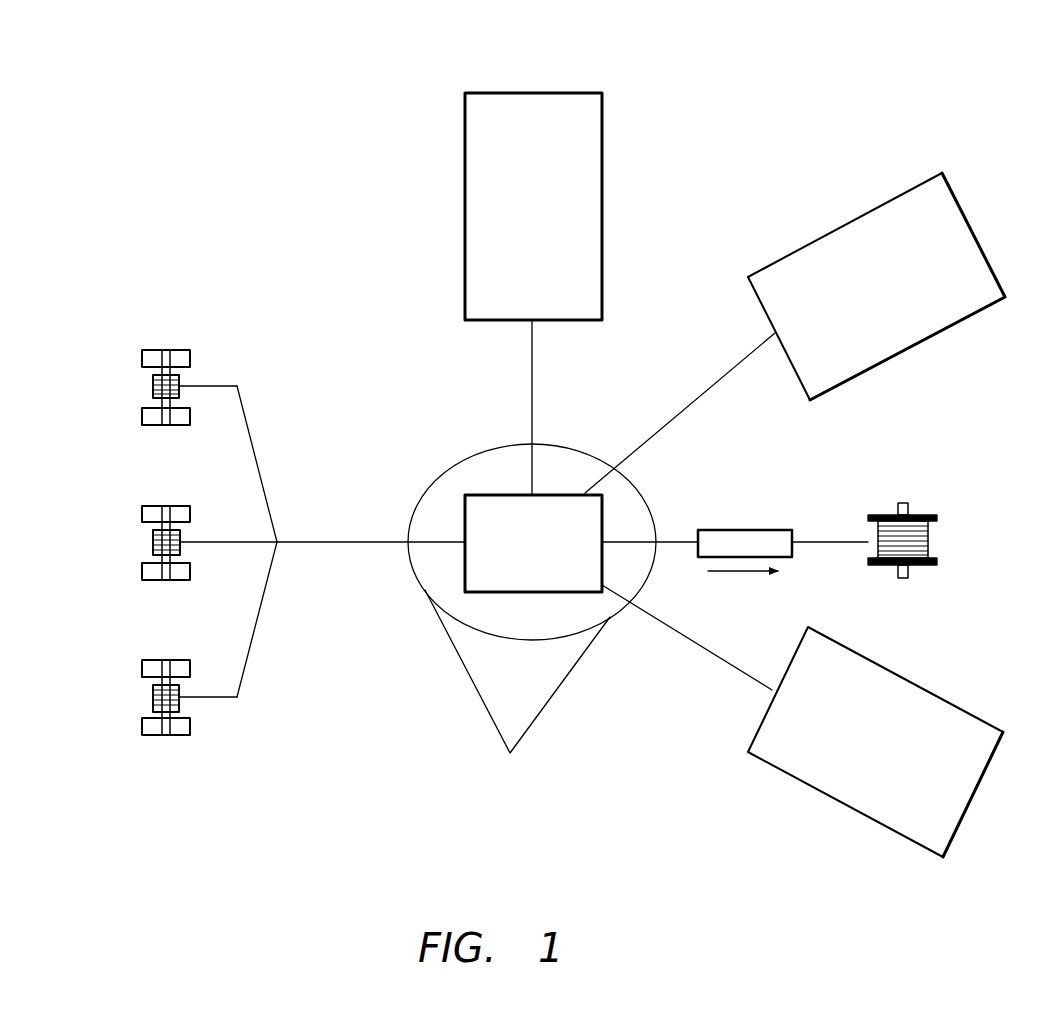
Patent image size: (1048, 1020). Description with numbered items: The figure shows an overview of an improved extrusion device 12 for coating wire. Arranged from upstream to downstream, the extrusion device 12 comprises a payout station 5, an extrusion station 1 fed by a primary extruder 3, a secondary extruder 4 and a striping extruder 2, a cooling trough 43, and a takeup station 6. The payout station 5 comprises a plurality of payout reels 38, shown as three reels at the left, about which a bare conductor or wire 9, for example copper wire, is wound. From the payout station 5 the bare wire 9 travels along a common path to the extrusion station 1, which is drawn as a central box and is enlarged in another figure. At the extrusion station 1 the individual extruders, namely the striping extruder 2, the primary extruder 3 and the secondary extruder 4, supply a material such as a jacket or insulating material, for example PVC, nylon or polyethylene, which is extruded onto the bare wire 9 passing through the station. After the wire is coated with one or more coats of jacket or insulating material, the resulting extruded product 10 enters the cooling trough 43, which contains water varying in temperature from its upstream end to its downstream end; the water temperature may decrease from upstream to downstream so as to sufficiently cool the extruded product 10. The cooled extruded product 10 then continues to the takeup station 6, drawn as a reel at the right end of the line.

The extrusion station 1 is at (606, 507).
The striping extruder 2 is at (978, 783).
The primary extruder 3 is at (602, 152).
The secondary extruder 4 is at (980, 240).
The payout station 5 is at (166, 328).
The takeup station 6 is at (930, 540).
The bare wire 9 is at (335, 542).
The extruded product 10 is at (812, 540).
The extrusion device 12 is at (890, 81).
The payout reel 38 is at (142, 358).
The cooling trough 43 is at (725, 530).